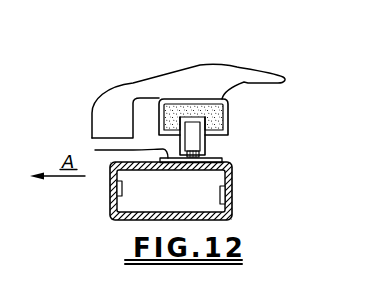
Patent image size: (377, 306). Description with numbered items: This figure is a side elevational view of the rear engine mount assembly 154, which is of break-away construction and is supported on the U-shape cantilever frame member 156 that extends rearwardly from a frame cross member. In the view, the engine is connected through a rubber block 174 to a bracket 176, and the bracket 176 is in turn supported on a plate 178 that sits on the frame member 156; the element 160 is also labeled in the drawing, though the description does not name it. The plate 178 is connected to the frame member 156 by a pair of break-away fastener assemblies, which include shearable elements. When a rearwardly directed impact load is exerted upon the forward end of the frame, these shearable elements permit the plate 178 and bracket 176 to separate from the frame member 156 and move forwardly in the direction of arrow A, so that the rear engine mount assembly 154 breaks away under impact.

The rear engine mount assembly 154 is at (172, 82).
The housing 160 is at (238, 72).
The rubber block 174 is at (220, 118).
The bracket 176 is at (205, 148).
The plate 178 is at (95, 150).
The U-shape cantilever frame member 156 is at (232, 192).